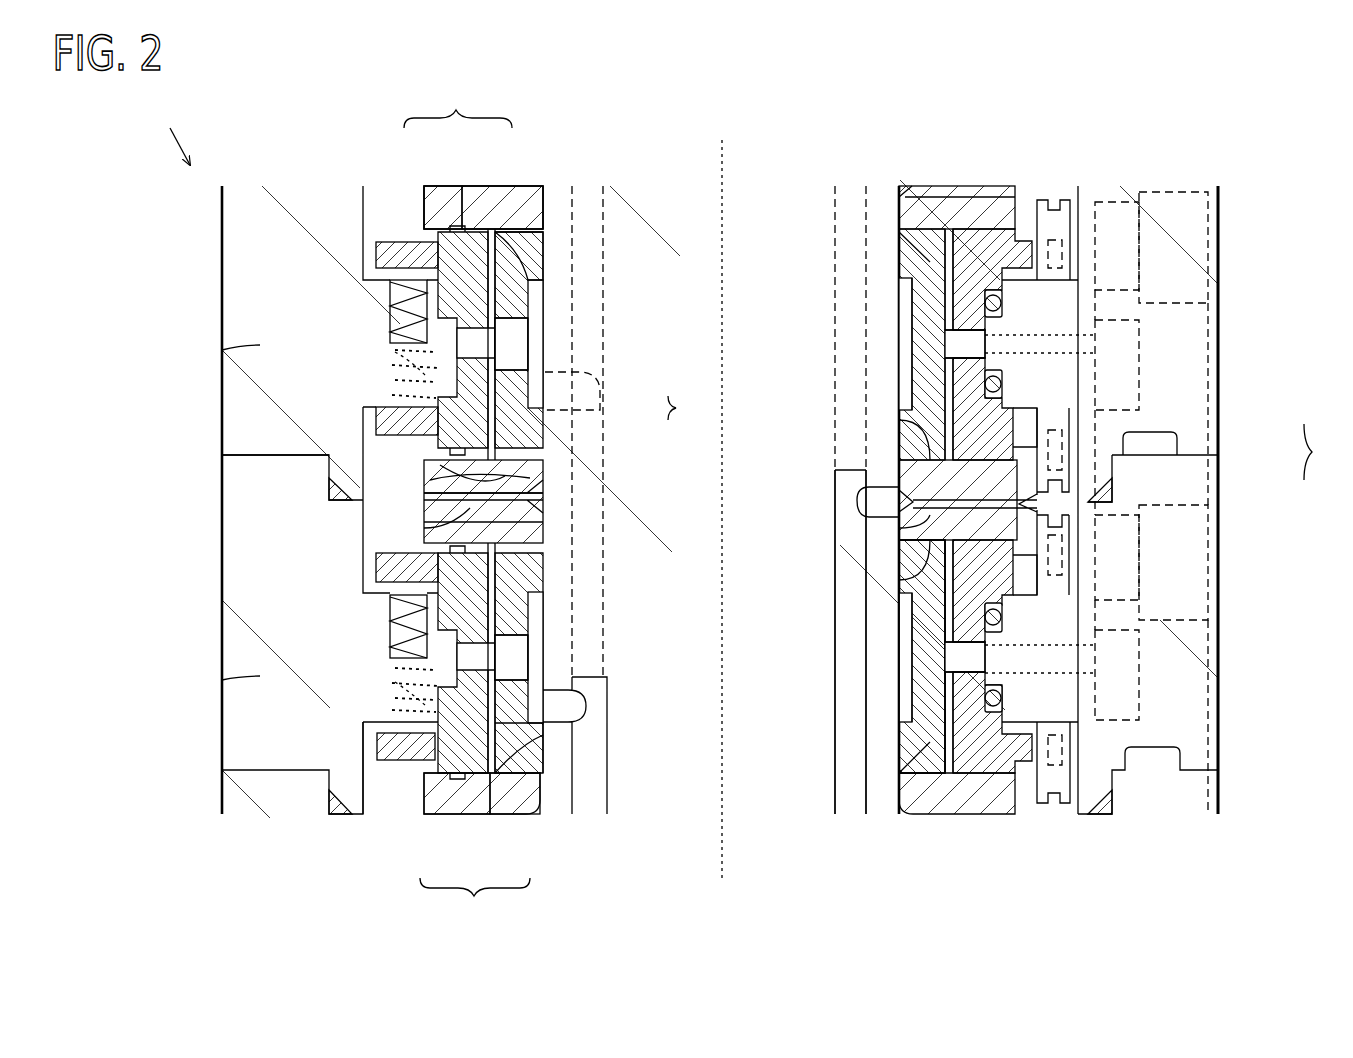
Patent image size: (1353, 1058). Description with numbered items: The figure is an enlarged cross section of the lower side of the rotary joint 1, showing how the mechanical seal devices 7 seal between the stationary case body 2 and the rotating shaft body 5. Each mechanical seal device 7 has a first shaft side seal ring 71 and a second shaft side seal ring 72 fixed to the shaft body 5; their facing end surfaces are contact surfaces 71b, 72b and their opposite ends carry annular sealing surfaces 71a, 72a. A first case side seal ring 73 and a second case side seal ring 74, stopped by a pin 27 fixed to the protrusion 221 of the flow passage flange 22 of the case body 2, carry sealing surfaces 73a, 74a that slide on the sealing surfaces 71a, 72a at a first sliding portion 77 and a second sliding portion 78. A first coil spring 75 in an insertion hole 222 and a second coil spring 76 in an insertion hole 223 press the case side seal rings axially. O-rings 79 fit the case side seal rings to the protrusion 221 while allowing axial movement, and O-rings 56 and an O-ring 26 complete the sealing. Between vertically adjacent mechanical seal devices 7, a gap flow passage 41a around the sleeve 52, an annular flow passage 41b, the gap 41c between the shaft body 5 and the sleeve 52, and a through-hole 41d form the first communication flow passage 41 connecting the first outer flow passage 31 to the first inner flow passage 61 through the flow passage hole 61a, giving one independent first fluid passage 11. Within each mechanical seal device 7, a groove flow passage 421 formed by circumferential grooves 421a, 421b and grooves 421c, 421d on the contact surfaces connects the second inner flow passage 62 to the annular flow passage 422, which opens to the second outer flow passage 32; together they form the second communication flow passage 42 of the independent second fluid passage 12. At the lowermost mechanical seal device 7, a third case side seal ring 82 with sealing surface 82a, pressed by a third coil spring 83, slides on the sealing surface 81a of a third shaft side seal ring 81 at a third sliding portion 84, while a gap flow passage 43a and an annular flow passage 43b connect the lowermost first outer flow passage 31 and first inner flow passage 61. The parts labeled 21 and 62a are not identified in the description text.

The joint 1 is at (170, 134).
The case body 2 is at (215, 245).
The shaft body 5 is at (656, 200).
The mechanical seal device 7 is at (378, 198).
The first fluid passage 11 is at (1212, 370).
The second fluid passage 12 is at (1212, 555).
The wall portion 21 is at (1222, 790).
The flow passage flange 22 is at (1150, 296).
The O-ring 26 is at (1112, 490).
The pin 27 is at (1060, 215).
The first outer flow passage 31 is at (1220, 325).
The second outer flow passage 32 is at (1220, 207).
The first communication flow passage 41 is at (475, 343).
The gap flow passage 41a is at (930, 405).
The annular flow passage 41b is at (925, 326).
The gap 41c is at (958, 344).
The through-hole 41d is at (520, 325).
The second communication flow passage 42 is at (1324, 452).
The gap flow passage 43a is at (1000, 700).
The annular flow passage 43b is at (925, 650).
The sleeve 52 is at (535, 290).
The O-ring 56 is at (540, 248).
The first inner flow passage 61 is at (624, 522).
The flow passage hole 61a is at (600, 350).
The second inner flow passage 62 is at (801, 642).
The bracket wall 62a is at (833, 794).
The first shaft side seal ring 71 is at (440, 472).
The sealing surface 71a is at (520, 445).
The contact surface 71b is at (424, 522).
The second shaft side seal ring 72 is at (528, 200).
The sealing surface 72a is at (484, 200).
The contact surface 72b is at (899, 480).
The first case side seal ring 73 is at (400, 420).
The sealing surface 73a is at (490, 470).
The second case side seal ring 74 is at (400, 245).
The sealing surface 74a is at (436, 200).
The first coil spring 75 is at (365, 392).
The second coil spring 76 is at (392, 300).
The first sliding portion 77 is at (689, 409).
The second sliding portion 78 is at (668, 528).
The O-ring 79 is at (985, 303).
The third shaft side seal ring 81 is at (520, 800).
The sealing surface 81a is at (485, 800).
The third case side seal ring 82 is at (418, 745).
The sealing surface 82a is at (452, 800).
The third coil spring 83 is at (377, 768).
The third sliding portion 84 is at (475, 899).
The protrusion 221 is at (1012, 300).
The insertion hole 222 is at (395, 352).
The insertion hole 223 is at (385, 330).
The groove flow passage 421 is at (1060, 470).
The circumferential groove 421a is at (480, 478).
The circumferential groove 421b is at (505, 497).
The groove 421c is at (348, 497).
The groove 421d is at (899, 528).
The annular flow passage 422 is at (1140, 445).